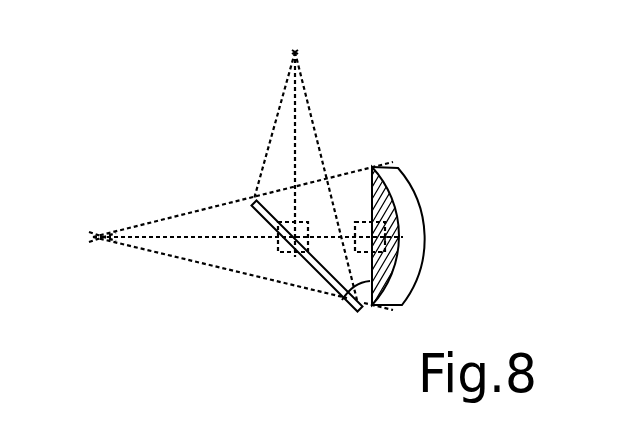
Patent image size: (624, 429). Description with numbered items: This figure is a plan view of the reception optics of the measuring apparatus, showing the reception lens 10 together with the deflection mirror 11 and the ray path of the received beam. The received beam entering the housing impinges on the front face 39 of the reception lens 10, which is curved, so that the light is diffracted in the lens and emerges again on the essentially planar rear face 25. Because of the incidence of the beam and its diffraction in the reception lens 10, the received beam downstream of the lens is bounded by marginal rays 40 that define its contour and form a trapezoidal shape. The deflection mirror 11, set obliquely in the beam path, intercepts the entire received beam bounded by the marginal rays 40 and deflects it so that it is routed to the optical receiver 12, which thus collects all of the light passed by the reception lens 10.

The reception lens 10 is at (422, 277).
The deflection mirror 11 is at (313, 265).
The optical receiver 12 is at (295, 52).
The rear face 25 is at (342, 300).
The front face 39 is at (385, 198).
The marginal rays 40 is at (275, 120).